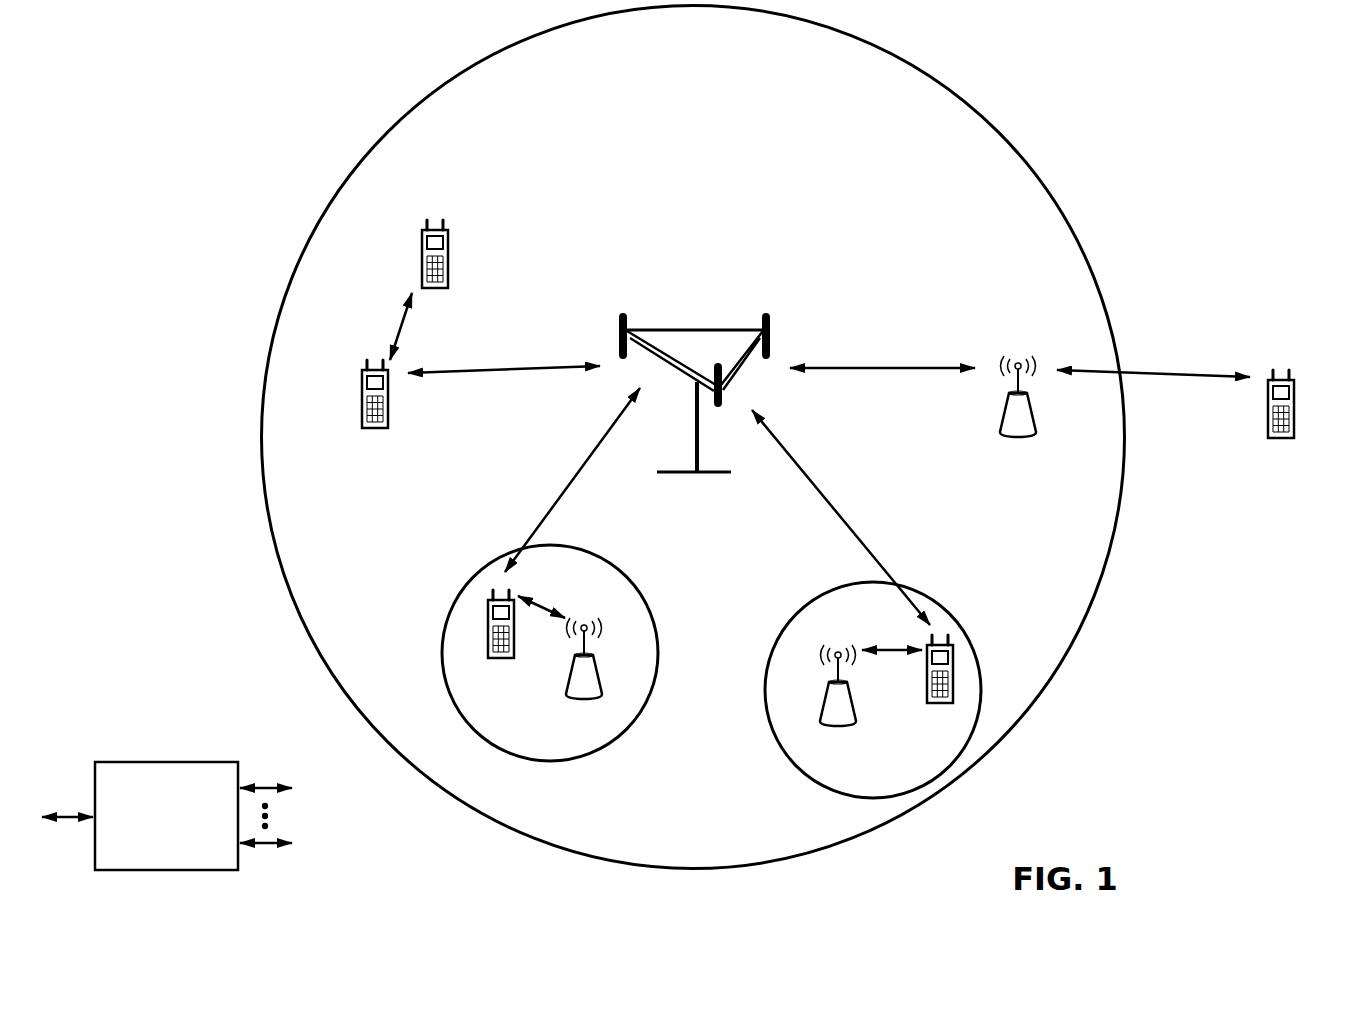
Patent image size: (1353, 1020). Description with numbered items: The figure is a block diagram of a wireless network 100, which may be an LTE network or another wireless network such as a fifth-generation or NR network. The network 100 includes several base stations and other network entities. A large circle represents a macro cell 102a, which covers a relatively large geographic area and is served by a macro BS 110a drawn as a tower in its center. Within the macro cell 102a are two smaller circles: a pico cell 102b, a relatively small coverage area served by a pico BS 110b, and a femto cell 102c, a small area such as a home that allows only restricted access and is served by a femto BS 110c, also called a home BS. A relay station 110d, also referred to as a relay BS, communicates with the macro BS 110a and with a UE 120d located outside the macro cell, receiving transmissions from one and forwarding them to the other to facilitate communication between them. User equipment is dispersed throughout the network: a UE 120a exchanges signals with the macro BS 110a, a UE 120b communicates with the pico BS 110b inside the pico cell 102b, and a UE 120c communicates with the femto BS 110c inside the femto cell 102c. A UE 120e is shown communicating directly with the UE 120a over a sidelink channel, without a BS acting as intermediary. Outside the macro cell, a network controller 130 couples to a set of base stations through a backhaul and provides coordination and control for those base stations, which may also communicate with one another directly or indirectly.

The wireless network 100 is at (1180, 93).
The macro cell 102a is at (983, 112).
The pico cell 102b is at (636, 578).
The femto cell 102c is at (799, 614).
The macro BS 110a is at (695, 326).
The pico BS 110b is at (604, 678).
The femto BS 110c is at (822, 703).
The relay station 110d is at (1019, 358).
The UE 120a is at (361, 382).
The UE 120b is at (488, 647).
The UE 120c is at (927, 703).
The UE 120d is at (1296, 392).
The UE 120e is at (421, 240).
The network controller 130 is at (160, 761).